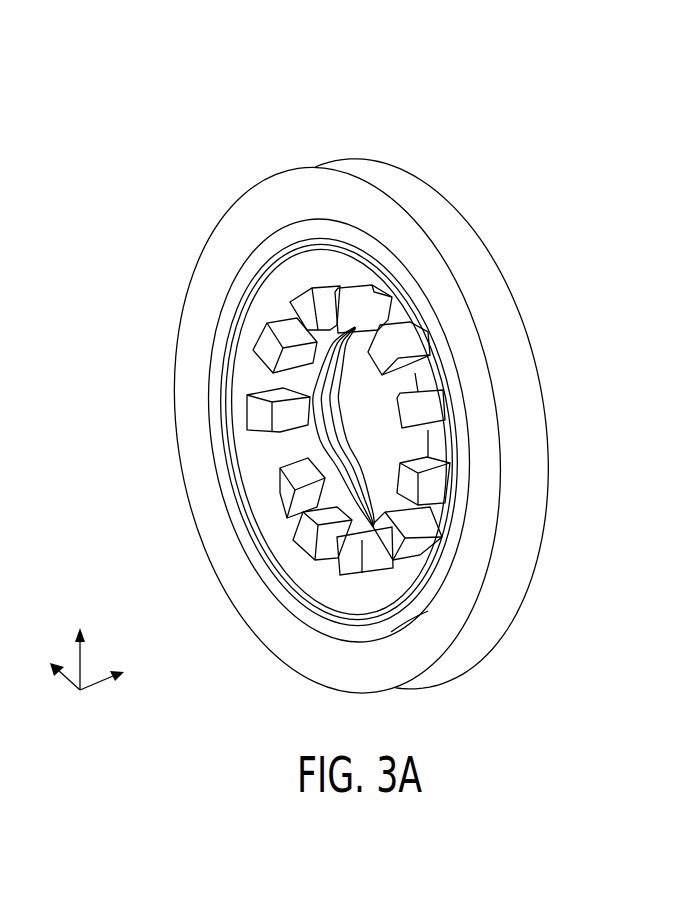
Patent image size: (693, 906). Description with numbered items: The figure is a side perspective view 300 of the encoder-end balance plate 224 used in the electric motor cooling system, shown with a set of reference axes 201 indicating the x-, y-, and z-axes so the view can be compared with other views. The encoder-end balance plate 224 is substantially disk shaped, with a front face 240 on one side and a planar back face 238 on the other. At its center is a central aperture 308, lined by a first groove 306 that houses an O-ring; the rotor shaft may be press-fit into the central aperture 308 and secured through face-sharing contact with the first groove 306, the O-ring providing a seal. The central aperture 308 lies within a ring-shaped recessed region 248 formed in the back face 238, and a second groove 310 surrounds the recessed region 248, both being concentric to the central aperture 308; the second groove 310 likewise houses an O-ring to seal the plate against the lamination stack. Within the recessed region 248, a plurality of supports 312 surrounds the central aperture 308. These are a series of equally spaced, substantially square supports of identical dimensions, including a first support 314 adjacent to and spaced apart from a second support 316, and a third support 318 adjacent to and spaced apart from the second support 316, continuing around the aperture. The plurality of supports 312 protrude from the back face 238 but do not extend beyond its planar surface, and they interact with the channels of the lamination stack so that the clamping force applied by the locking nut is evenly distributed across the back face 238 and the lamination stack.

The side perspective view 300 is at (402, 52).
The encoder-end balance plate 224 is at (415, 182).
The front face 240 is at (566, 315).
The back face 238 is at (142, 420).
The recessed region 248 is at (258, 524).
The second groove 310 is at (395, 632).
The first groove 306 is at (338, 473).
The central aperture 308 is at (356, 412).
The plurality of supports 312 is at (342, 268).
The first support 314 is at (363, 309).
The second support 316 is at (430, 347).
The third support 318 is at (421, 409).
The reference axes 201 is at (124, 638).